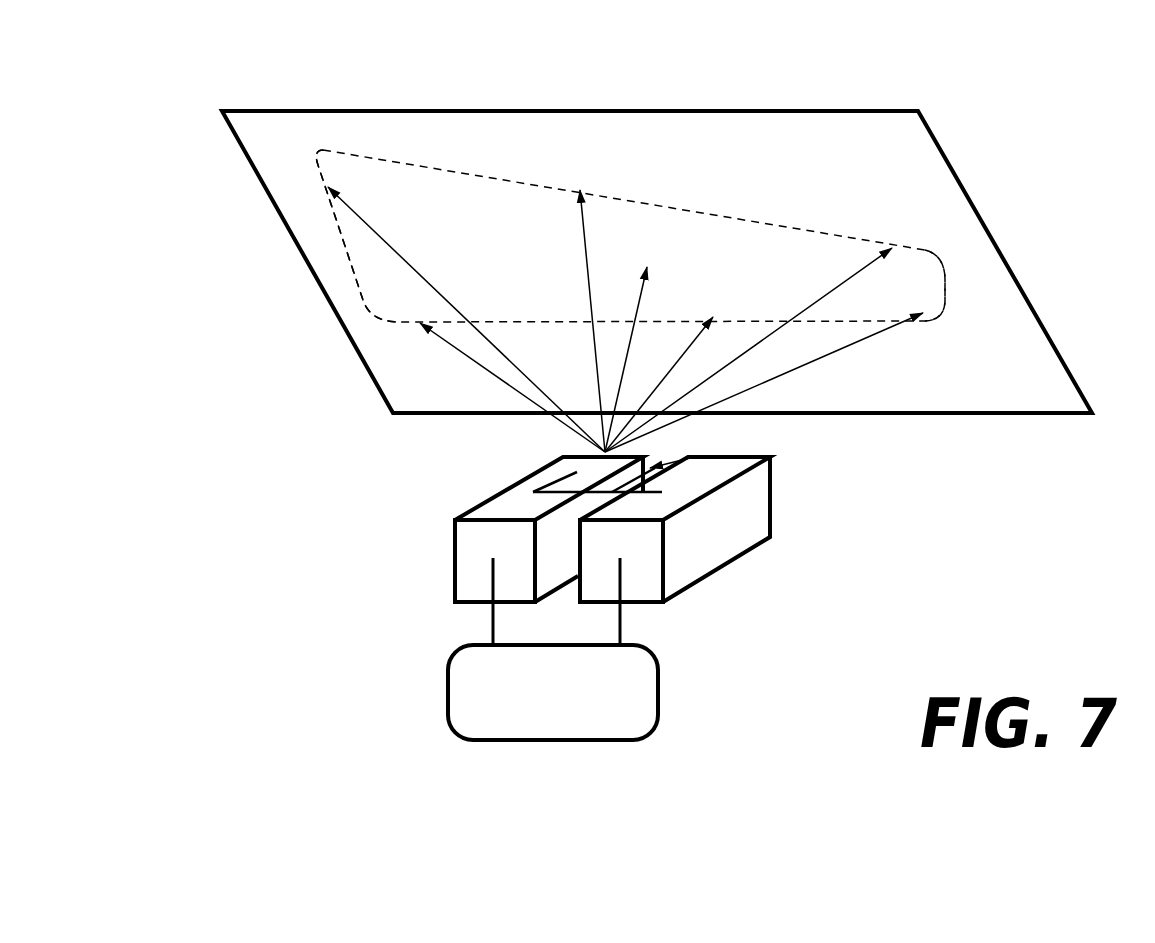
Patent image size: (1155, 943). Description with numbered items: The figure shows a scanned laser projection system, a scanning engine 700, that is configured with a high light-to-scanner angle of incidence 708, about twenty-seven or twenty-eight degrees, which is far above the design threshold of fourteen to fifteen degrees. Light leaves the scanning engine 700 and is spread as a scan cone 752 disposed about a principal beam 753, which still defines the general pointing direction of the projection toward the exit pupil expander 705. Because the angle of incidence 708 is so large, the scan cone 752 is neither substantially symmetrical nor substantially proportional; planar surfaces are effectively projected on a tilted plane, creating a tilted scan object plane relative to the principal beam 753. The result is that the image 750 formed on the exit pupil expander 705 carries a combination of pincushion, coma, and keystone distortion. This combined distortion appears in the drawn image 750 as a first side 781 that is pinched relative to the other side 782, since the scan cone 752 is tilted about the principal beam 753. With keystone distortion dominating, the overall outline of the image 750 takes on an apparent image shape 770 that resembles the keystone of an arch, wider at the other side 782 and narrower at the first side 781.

The scanning engine 700 is at (540, 585).
The exit pupil expander 705 is at (1063, 360).
The angle of incidence 708 is at (543, 490).
The image 750 is at (477, 198).
The scan cone 752 is at (866, 362).
The principal beam 753 is at (620, 378).
The apparent image shape 770 is at (692, 208).
The first side 781 is at (935, 280).
The other side 782 is at (327, 217).